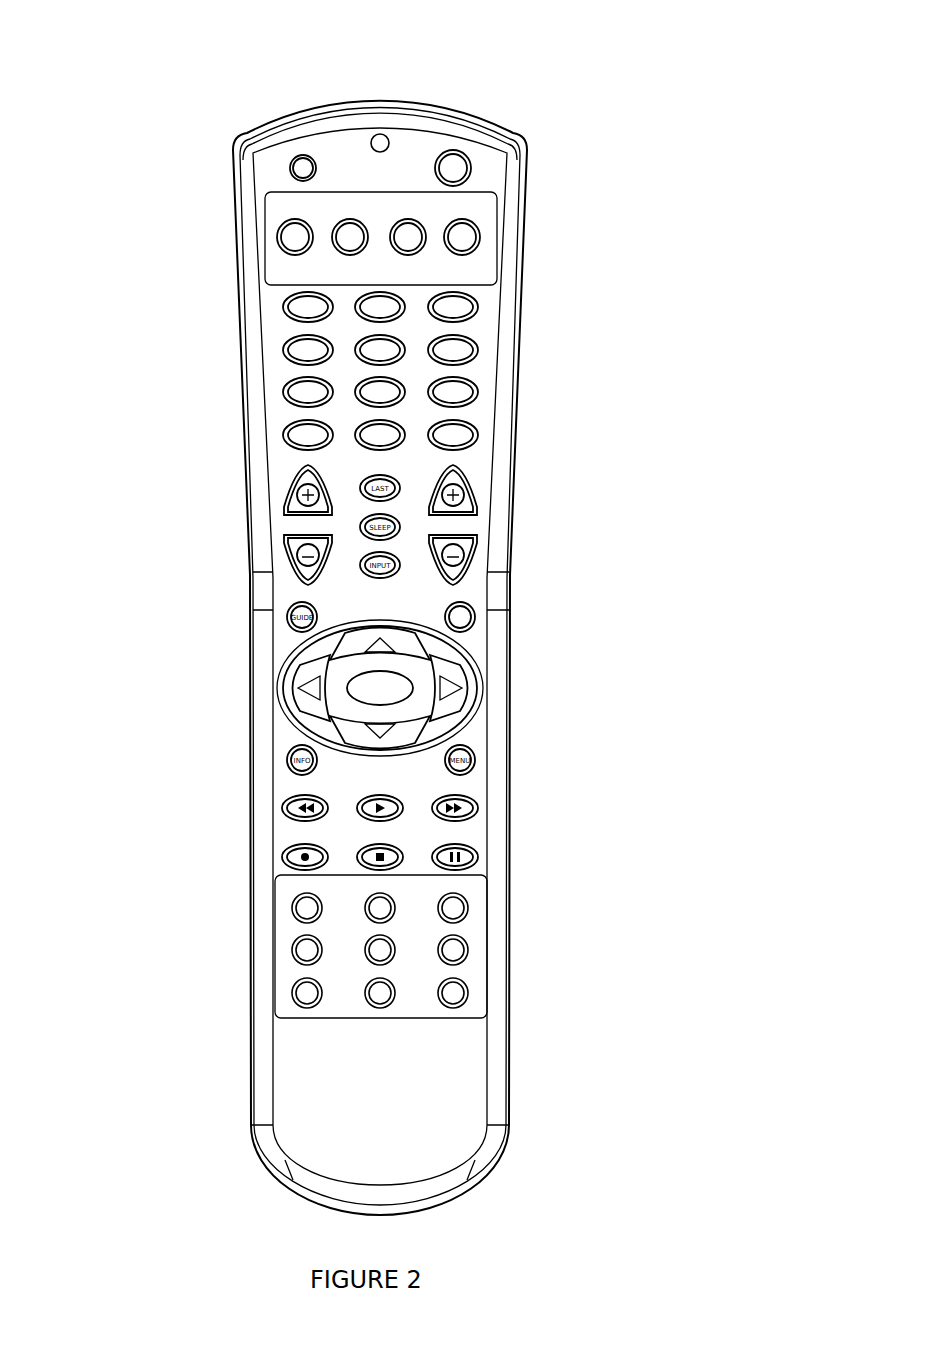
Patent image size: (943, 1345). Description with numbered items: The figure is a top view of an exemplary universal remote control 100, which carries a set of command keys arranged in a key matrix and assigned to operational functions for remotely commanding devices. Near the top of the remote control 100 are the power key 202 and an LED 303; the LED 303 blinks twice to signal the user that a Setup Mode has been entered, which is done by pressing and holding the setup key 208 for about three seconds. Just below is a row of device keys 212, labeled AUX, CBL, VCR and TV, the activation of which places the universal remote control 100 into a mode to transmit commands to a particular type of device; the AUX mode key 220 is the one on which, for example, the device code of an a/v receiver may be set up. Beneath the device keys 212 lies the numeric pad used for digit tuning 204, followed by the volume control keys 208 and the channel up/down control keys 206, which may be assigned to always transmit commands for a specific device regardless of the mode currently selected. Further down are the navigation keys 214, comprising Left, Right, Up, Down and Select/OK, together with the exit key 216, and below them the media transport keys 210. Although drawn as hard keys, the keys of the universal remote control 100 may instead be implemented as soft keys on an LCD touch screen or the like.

The universal remote control 100 is at (730, 1112).
The power key 202 is at (477, 177).
The digit tuning keys 204 is at (212, 292).
The channel up/down control keys 206 is at (480, 508).
The volume control keys and setup key 208 is at (290, 163).
The media transport keys 210 is at (567, 787).
The device keys 212 is at (553, 192).
The navigation keys 214 is at (562, 620).
The exit key 216 is at (463, 594).
The AUX mode key 220 is at (276, 237).
The LED 303 is at (381, 130).